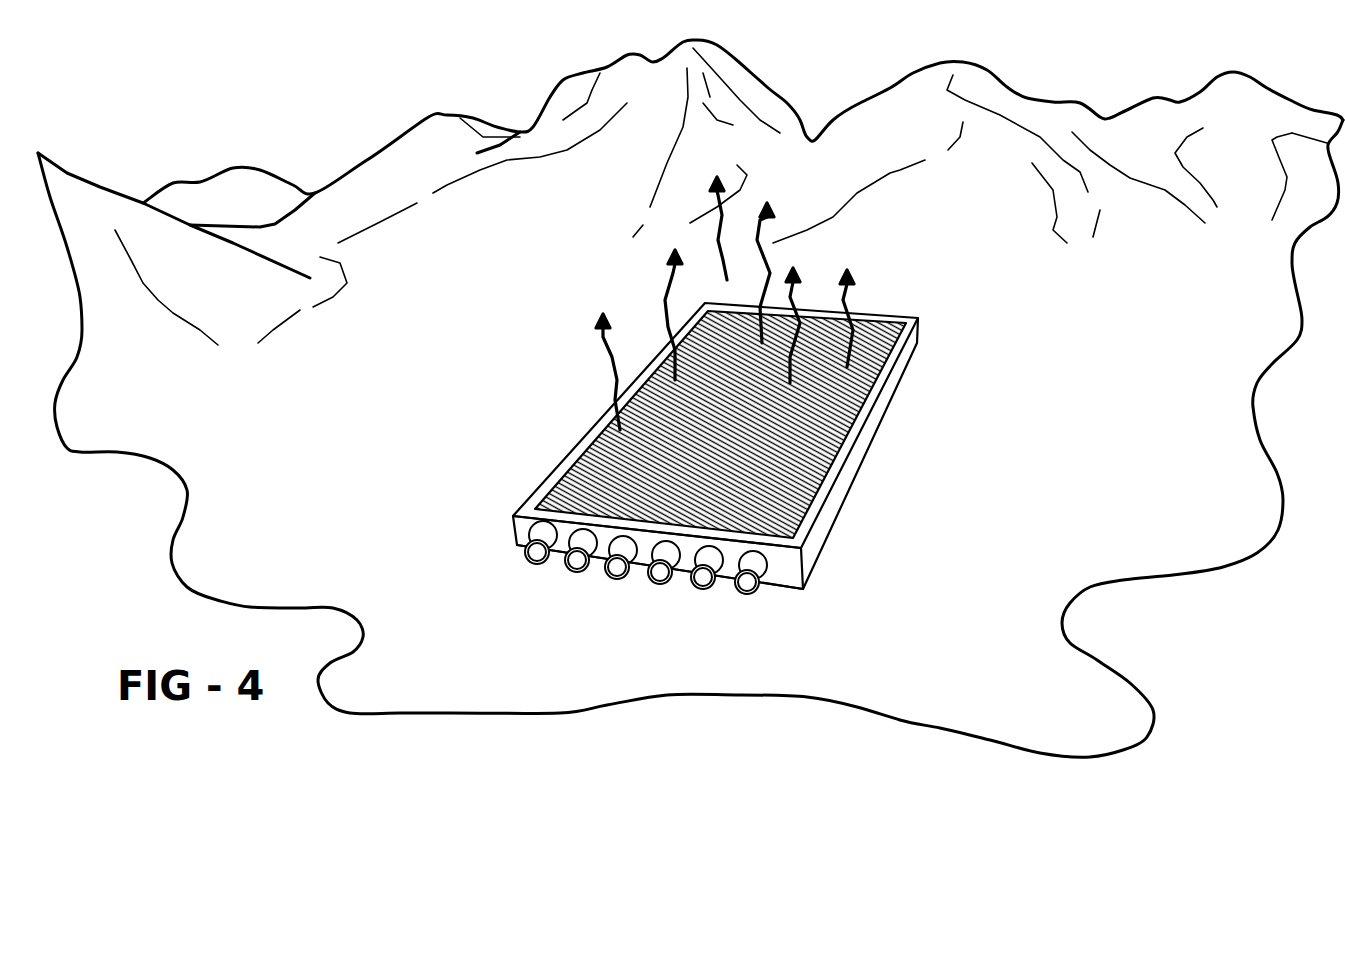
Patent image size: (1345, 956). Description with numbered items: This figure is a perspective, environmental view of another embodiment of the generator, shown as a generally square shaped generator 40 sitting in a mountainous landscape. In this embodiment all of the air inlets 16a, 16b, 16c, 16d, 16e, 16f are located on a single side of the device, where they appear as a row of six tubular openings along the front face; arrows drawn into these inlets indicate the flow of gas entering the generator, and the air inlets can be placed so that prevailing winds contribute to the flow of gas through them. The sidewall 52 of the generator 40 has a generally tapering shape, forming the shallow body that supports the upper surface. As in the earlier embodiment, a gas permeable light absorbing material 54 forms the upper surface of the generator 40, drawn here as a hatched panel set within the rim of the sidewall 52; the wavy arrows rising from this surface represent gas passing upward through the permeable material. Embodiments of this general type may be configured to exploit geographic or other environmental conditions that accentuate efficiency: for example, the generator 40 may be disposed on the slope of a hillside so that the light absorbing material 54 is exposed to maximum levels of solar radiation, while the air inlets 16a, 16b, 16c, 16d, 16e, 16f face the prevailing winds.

The generator 40 is at (690, 446).
The gas permeable light absorbing material 54 is at (734, 397).
The sidewall 52 is at (711, 575).
The air inlet 16a is at (490, 557).
The air inlet 16b is at (535, 582).
The air inlet 16c is at (593, 592).
The air inlet 16d is at (641, 606).
The air inlet 16e is at (705, 605).
The air inlet 16f is at (777, 600).